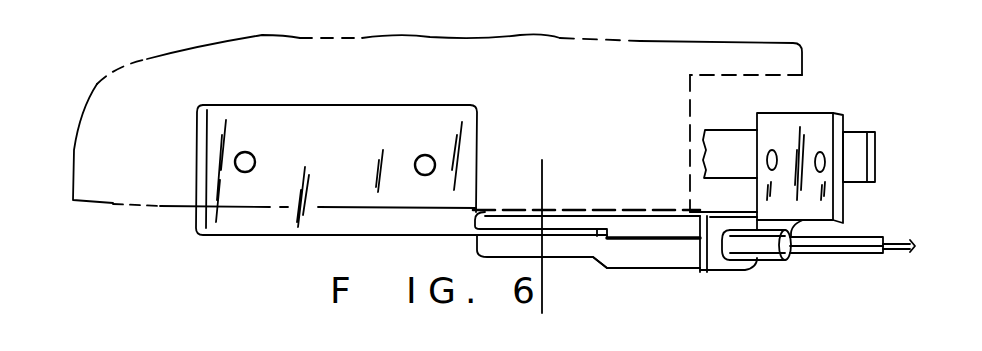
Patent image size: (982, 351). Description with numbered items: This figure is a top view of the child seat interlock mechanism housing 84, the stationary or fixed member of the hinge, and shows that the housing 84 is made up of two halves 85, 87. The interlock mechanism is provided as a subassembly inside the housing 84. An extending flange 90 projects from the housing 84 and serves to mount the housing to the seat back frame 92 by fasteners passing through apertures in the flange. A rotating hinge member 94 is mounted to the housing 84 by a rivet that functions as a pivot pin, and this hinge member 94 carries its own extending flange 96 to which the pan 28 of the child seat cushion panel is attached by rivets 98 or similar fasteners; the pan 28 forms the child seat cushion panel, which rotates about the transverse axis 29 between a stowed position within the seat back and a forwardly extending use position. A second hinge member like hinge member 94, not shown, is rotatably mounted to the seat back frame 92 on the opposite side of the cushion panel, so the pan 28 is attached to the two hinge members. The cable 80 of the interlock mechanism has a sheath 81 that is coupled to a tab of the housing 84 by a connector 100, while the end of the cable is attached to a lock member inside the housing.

The seat pan 28 is at (107, 207).
The transverse axis 29 is at (542, 313).
The cable 80 is at (898, 253).
The sheath 81 is at (856, 234).
The housing 84 is at (643, 276).
The housing half 85 is at (663, 260).
The housing half 87 is at (623, 223).
The extending flange 90 is at (805, 115).
The seat back frame 92 is at (722, 130).
The rotating hinge member 94 is at (282, 236).
The extending flange 96 is at (418, 103).
The rivets 98 is at (256, 160).
The connector 100 is at (763, 260).